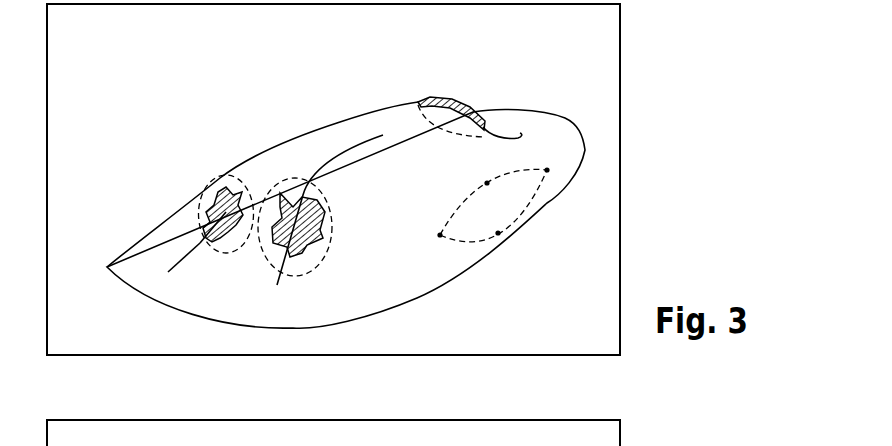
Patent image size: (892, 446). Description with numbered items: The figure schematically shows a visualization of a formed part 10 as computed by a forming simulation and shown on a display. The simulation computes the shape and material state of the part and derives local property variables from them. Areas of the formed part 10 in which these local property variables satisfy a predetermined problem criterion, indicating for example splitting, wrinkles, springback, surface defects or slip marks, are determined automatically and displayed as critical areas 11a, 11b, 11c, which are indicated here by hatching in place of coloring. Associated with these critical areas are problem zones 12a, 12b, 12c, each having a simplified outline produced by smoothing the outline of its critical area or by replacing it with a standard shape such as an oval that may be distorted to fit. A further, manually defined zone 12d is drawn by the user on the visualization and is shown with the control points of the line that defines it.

The formed part 10 is at (518, 88).
The critical area 11a is at (205, 206).
The critical area 11b is at (307, 242).
The critical area 11c is at (455, 100).
The problem zone 12a is at (225, 187).
The problem zone 12b is at (322, 187).
The problem zone 12c is at (418, 102).
The manually defined zone 12d is at (492, 212).